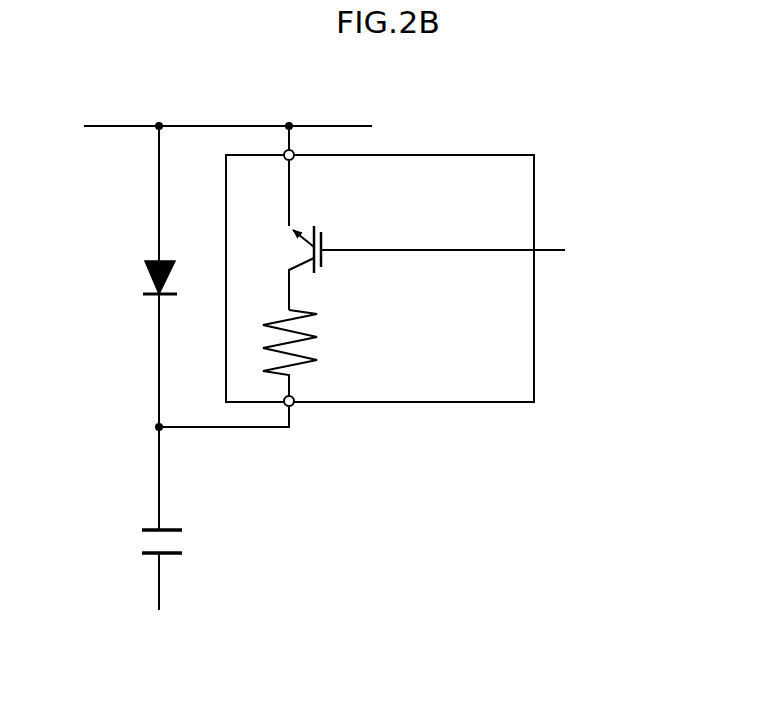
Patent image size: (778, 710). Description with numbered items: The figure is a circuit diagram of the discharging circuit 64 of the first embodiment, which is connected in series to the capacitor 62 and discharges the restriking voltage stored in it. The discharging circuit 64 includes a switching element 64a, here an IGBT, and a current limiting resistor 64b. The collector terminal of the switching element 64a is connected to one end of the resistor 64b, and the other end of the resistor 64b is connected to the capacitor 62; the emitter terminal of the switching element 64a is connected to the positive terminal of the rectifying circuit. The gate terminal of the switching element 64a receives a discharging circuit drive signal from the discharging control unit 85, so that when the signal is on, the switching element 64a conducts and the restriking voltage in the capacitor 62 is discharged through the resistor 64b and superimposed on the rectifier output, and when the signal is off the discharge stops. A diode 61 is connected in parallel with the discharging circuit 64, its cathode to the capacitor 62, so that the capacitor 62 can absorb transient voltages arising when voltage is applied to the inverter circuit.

The diode 61 is at (142, 283).
The capacitor 62 is at (136, 535).
The discharging circuit 64 is at (534, 155).
The switching element 64a is at (331, 237).
The resistor 64b is at (330, 337).
The discharging control unit 85 is at (461, 251).